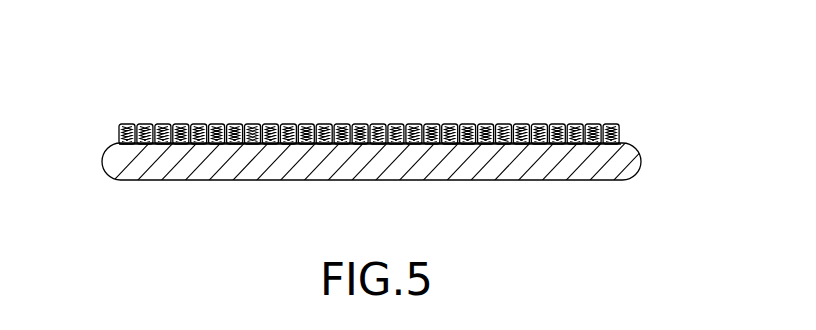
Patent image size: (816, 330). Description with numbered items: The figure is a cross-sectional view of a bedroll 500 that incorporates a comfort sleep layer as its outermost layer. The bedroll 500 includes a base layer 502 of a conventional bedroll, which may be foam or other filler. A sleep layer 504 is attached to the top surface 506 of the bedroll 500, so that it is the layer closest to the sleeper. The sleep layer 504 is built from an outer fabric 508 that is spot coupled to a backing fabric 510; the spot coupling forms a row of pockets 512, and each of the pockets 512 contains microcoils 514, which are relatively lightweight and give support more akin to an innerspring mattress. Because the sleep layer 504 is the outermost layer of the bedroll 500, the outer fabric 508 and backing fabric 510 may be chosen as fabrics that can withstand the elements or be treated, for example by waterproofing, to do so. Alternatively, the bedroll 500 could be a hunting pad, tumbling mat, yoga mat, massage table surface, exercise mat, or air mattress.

The bedroll 500 is at (675, 100).
The base layer 502 is at (252, 168).
The sleep layer 504 is at (118, 137).
The top surface 506 is at (535, 145).
The outer fabric 508 is at (420, 123).
The backing fabric 510 is at (488, 145).
The pockets 512 is at (613, 123).
The microcoils 514 is at (283, 123).